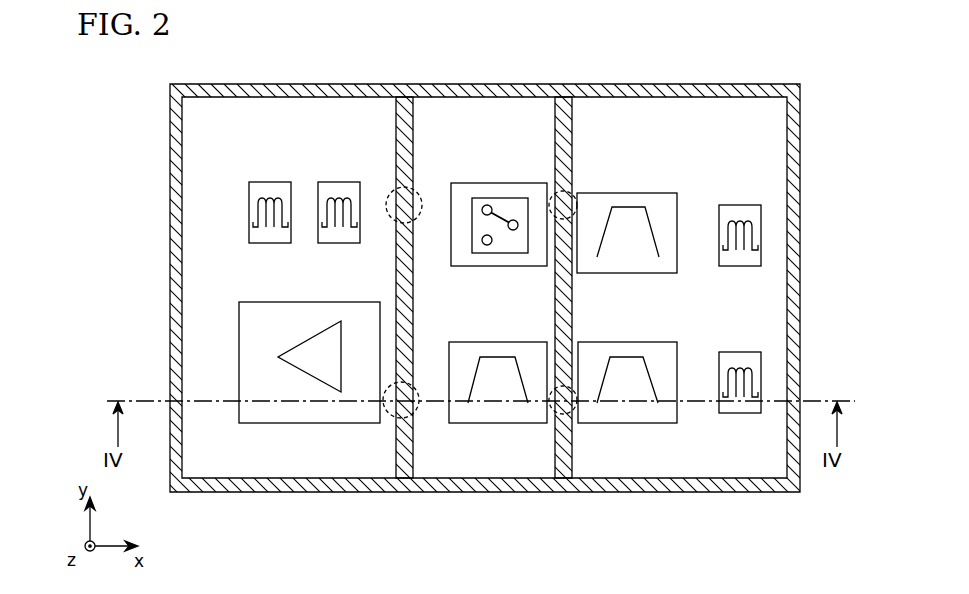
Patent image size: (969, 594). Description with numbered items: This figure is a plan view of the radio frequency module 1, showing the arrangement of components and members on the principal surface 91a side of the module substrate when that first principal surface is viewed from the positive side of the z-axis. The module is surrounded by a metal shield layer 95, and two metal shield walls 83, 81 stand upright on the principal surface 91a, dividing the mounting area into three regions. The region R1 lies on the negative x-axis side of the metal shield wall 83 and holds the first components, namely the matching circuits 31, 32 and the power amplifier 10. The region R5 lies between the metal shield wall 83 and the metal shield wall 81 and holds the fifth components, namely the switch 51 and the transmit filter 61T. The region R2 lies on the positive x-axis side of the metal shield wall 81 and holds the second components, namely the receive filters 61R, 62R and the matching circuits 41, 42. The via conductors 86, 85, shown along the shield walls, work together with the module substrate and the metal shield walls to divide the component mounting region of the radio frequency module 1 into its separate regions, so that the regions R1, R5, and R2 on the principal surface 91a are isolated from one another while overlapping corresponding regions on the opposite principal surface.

The radio frequency module 1 is at (484, 320).
The metal shield layer 95 is at (171, 226).
The principal surface 91a is at (243, 148).
The metal shield wall 83 is at (414, 146).
The metal shield wall 81 is at (573, 146).
The matching circuit 31 is at (279, 182).
The matching circuit 32 is at (347, 182).
The matching circuit 41 is at (744, 352).
The matching circuit 42 is at (744, 205).
The power amplifier 10 is at (319, 302).
The switch 51 is at (506, 183).
The transmit filter 61T is at (506, 342).
The receive filter 61R is at (667, 342).
The receive filter 62R is at (683, 174).
The via conductor 86 is at (421, 410).
The via conductor 85 is at (552, 413).
The region R1 is at (288, 457).
The region R5 is at (492, 455).
The region R2 is at (687, 457).